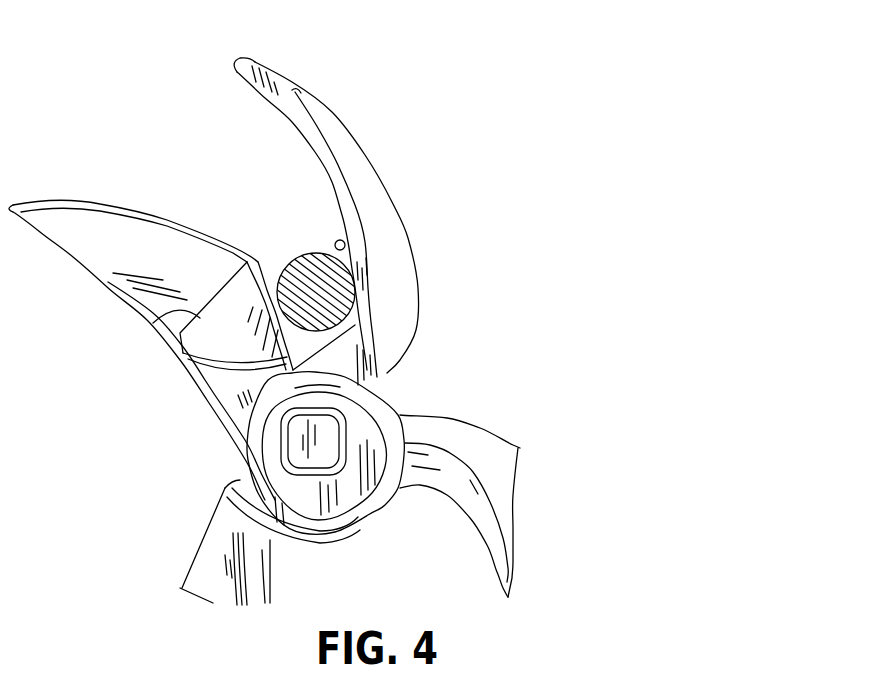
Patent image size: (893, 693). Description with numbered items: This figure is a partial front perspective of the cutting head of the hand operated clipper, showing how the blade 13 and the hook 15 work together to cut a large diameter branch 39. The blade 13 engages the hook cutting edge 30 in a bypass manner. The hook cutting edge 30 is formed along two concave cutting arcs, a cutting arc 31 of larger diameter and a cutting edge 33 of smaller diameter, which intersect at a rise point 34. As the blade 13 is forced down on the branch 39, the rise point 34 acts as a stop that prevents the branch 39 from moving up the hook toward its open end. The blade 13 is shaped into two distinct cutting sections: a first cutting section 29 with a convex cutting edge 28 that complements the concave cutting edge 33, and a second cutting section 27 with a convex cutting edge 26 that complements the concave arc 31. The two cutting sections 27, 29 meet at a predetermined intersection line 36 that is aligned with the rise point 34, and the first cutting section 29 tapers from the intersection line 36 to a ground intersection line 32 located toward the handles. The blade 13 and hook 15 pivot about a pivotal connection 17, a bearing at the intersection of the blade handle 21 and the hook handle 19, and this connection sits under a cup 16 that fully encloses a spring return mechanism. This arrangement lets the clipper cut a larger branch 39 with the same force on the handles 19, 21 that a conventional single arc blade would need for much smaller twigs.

The blade 13 is at (173, 367).
The hook 15 is at (365, 156).
The cup 16 is at (325, 460).
The pivotal connection 17 is at (390, 502).
The hook handle 19 is at (557, 467).
The blade handle 21 is at (178, 590).
The cutting edge 26 is at (153, 211).
The second cutting section 27 is at (63, 215).
The cutting edge 28 is at (268, 270).
The first cutting section 29 is at (247, 369).
The hook cutting edge 30 is at (315, 138).
The cutting arc 31 is at (292, 124).
The ground intersection line 32 is at (235, 392).
The cutting edge 33 is at (325, 335).
The rise point 34 is at (345, 243).
The predetermined intersection line 36 is at (177, 332).
The branch 39 is at (312, 254).